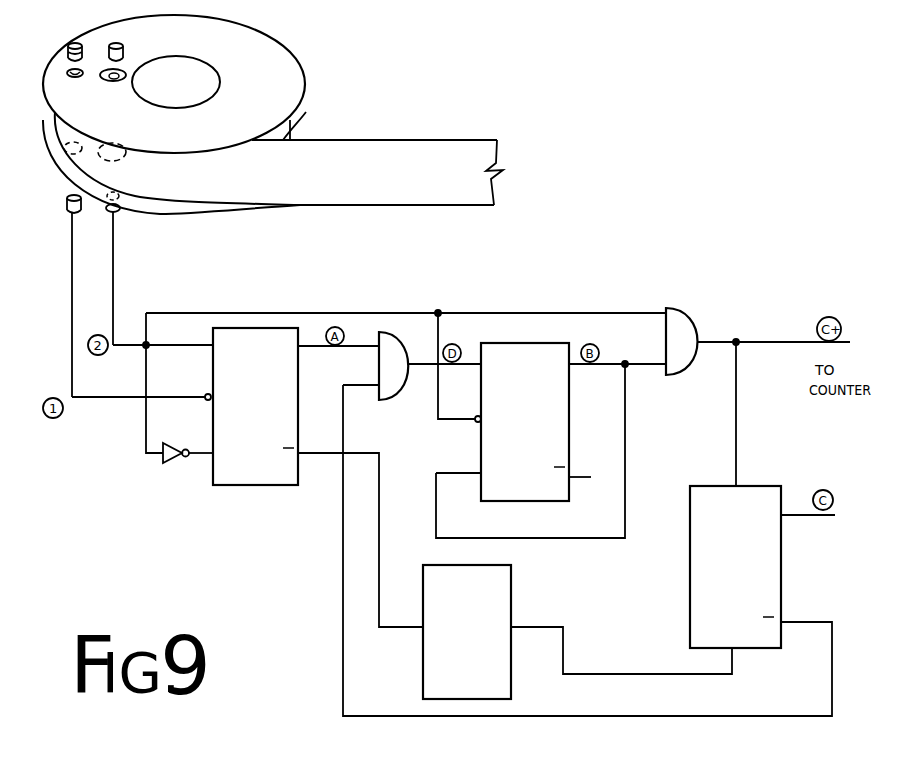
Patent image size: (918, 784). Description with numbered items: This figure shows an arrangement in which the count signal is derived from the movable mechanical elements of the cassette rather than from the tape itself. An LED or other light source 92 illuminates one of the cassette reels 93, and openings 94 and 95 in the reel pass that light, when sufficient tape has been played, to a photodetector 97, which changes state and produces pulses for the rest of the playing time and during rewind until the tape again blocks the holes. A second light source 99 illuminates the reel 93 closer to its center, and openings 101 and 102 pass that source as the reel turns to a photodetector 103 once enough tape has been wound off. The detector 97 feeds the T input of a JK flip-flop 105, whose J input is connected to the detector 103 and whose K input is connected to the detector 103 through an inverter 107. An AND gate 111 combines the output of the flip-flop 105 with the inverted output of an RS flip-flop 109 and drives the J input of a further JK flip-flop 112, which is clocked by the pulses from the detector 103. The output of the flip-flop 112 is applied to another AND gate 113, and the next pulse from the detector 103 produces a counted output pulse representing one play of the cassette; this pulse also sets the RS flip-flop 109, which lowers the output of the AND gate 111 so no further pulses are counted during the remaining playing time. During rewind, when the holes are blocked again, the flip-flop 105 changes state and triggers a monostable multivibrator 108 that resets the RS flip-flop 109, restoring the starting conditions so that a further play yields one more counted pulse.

The light source 92 is at (68, 52).
The cassette reel 93 is at (291, 84).
The opening 94 is at (67, 157).
The opening 95 is at (76, 79).
The photodetector 97 is at (67, 206).
The second light source 99 is at (123, 56).
The opening 101 is at (115, 82).
The opening 102 is at (117, 160).
The photodetector 103 is at (118, 213).
The JK flip-flop 105 is at (253, 480).
The inverter 107 is at (166, 466).
The multivibrator 108 is at (503, 580).
The RS flip-flop 109 is at (697, 490).
The AND gate 111 is at (392, 393).
The JK flip-flop 112 is at (481, 444).
The AND gate 113 is at (672, 378).